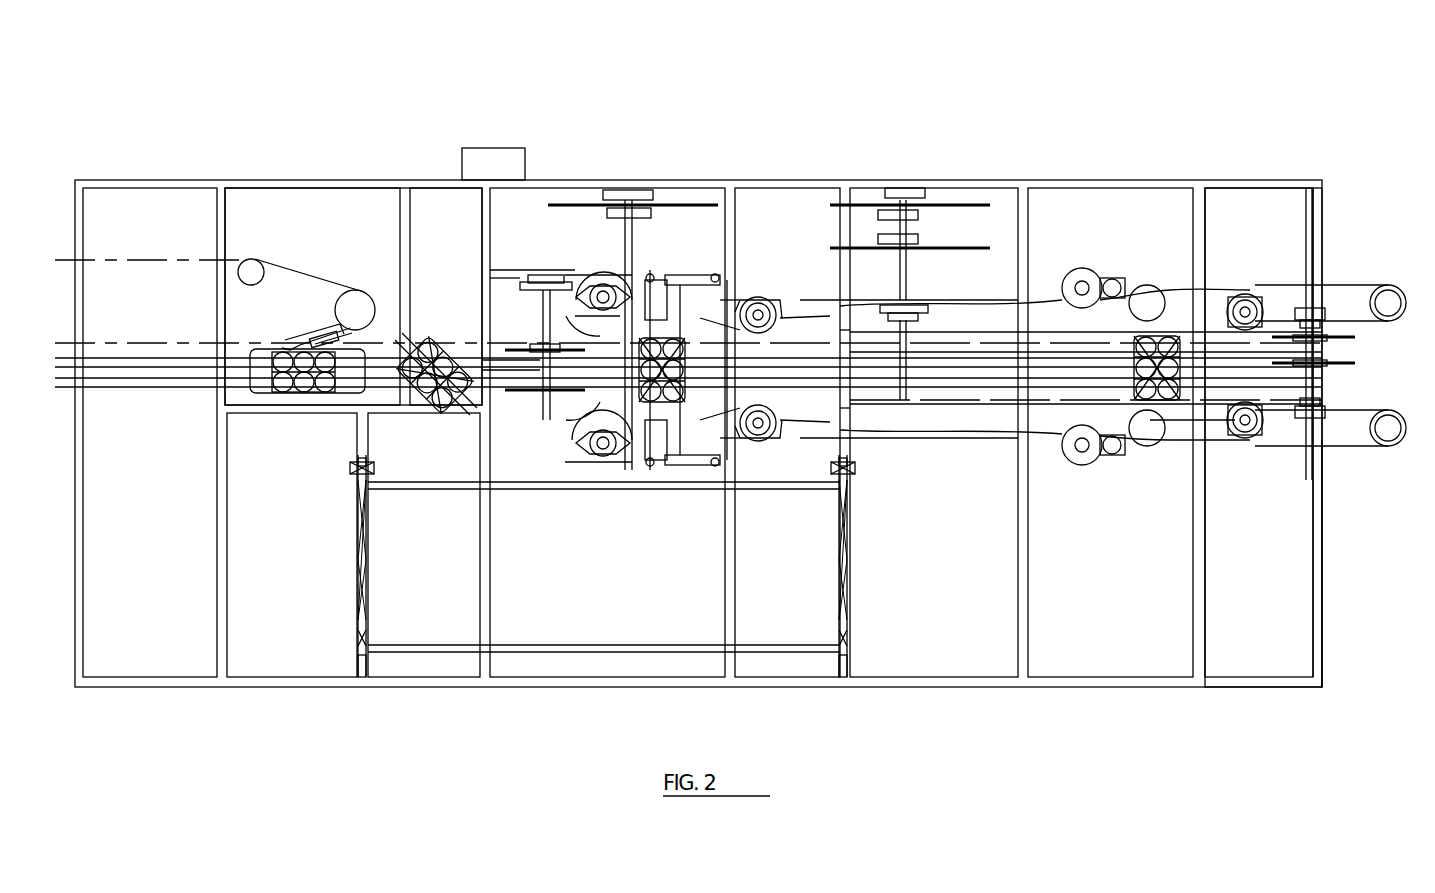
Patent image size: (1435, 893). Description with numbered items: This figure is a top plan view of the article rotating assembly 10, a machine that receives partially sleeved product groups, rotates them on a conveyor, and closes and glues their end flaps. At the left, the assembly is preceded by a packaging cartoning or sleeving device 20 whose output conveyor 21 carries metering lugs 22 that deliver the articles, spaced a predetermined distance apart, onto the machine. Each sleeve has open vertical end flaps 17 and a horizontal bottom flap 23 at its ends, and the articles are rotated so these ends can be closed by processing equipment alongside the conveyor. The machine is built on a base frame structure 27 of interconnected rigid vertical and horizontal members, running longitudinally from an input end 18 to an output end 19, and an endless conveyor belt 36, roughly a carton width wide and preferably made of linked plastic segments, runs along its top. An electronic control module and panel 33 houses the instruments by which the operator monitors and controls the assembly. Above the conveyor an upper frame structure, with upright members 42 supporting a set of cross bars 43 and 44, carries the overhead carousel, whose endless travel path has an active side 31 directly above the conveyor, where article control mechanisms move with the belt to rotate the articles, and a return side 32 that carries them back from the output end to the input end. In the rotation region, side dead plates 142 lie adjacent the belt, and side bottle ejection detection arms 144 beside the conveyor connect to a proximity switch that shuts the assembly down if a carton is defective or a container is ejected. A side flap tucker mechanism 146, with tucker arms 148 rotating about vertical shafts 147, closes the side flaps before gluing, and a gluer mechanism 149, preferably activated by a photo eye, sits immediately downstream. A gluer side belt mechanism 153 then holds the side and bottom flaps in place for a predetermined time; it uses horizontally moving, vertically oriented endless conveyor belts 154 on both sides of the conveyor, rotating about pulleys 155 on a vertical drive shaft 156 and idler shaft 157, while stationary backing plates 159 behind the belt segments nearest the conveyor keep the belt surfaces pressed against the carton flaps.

The article rotating assembly 10 is at (1247, 120).
The vertical end flaps 17 is at (440, 328).
The input end 18 is at (401, 170).
The output end 19 is at (1376, 133).
The packaging cartoning or sleeving device 20 is at (266, 249).
The output conveyor 21 is at (314, 292).
The metering lugs 22 is at (344, 338).
The horizontal bottom flap 23 is at (470, 334).
The base frame structure 27 is at (216, 569).
The active side 31 is at (1343, 221).
The return side 32 is at (1343, 476).
The electronic control module and panel 33 is at (525, 158).
The endless conveyor belt 36 is at (72, 388).
The upright members 42 is at (350, 468).
The cross bar 43 is at (421, 492).
The cross bar 44 is at (358, 560).
The side dead plates 142 is at (462, 416).
The side bottle ejection detection arms 144 is at (722, 288).
The side flap tucker mechanism 146 is at (583, 515).
The vertical shafts 147 is at (612, 478).
The tucker arms 148 is at (606, 268).
The gluer mechanism 149 is at (684, 276).
The gluer side belt mechanism 153 is at (962, 458).
The endless conveyor belts 154 is at (1174, 462).
The pulleys 155 is at (1263, 299).
The drive shaft 156 is at (1238, 297).
The idler shaft 157 is at (764, 440).
The stationary backing plates 159 is at (1222, 458).